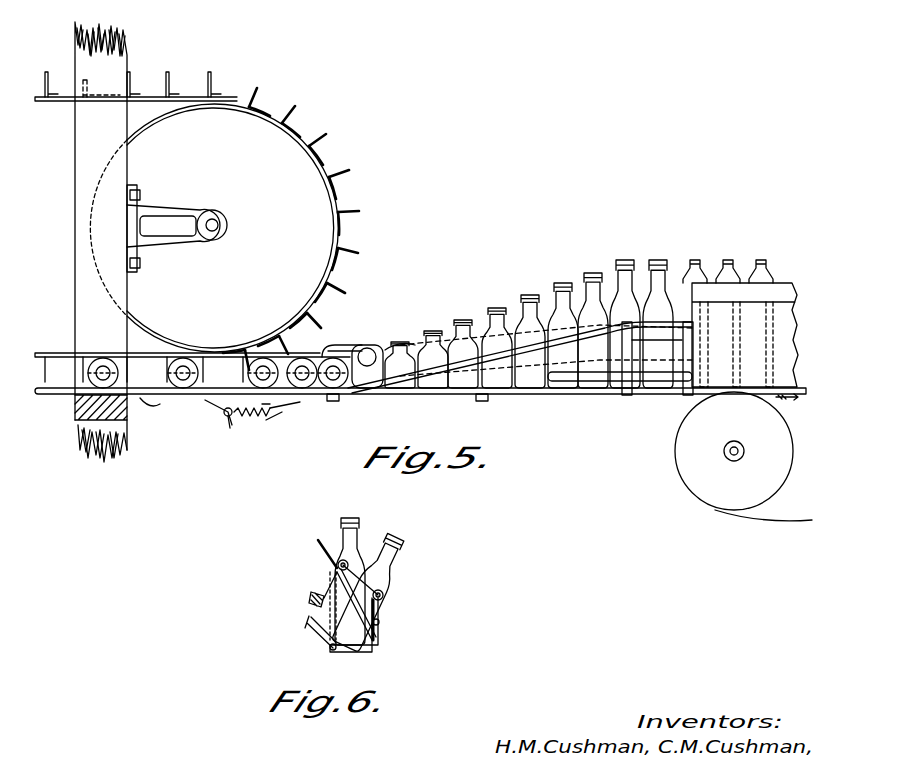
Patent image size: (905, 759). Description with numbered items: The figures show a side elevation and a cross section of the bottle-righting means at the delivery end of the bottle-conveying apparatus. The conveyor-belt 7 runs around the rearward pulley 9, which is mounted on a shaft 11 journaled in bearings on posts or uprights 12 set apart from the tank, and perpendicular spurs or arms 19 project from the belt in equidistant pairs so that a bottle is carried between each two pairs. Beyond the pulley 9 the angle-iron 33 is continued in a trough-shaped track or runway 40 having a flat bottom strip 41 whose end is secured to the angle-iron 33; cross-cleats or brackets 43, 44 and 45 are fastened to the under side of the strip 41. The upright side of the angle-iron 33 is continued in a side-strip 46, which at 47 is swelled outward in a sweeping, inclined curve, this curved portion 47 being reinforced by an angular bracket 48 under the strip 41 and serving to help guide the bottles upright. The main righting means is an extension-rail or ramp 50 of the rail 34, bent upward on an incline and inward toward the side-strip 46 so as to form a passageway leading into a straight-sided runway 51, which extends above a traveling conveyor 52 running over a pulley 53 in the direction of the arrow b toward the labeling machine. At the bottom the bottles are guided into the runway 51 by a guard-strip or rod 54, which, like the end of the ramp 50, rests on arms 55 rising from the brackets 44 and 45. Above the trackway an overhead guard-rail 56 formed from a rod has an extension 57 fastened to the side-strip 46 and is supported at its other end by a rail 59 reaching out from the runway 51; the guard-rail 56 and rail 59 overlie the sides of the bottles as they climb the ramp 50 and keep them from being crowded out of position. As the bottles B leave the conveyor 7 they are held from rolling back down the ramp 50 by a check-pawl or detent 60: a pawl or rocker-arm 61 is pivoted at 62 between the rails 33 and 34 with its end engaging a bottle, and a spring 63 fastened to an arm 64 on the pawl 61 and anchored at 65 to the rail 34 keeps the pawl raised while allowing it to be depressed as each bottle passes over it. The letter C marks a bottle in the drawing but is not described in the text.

In FIG. 5, the conveyor-belt 7 is at (40, 102).
In FIG. 5, the rearward pulley 9 is at (232, 228).
In FIG. 5, the shaft 11 is at (218, 225).
In FIG. 5, the post 12 is at (101, 242).
In FIG. 5, the spurs or arms 19 is at (213, 96).
In FIG. 5, the angle-iron 33 is at (192, 370).
In FIG. 5, the rail or track 34 is at (154, 409).
In FIG. 5, the trough-shaped track or runway 40 is at (468, 318).
In FIG. 5, the flat bottom strip 41 is at (432, 398).
In FIG. 5, the cross-cleat or bracket 43 is at (336, 402).
In FIG. 5, the cross-cleat or bracket 44 is at (626, 396).
In FIG. 6, the cross-cleat or bracket 44 is at (380, 645).
In FIG. 5, the cross-cleat or bracket 45 is at (686, 396).
In FIG. 5, the side-strip 46 is at (332, 345).
In FIG. 5, the curved and inclined portion 47 is at (440, 345).
In FIG. 5, the angular bracket 48 is at (481, 401).
In FIG. 6, the angular bracket 48 is at (345, 652).
In FIG. 5, the extension-rail or ramp 50 is at (448, 344).
In FIG. 6, the extension-rail or ramp 50 is at (384, 593).
In FIG. 5, the runway 51 is at (782, 290).
In FIG. 6, the runway 51 is at (317, 546).
In FIG. 5, the traveling belt or conveyor 52 is at (790, 519).
In FIG. 5, the pulley 53 is at (734, 451).
In FIG. 5, the guard-strip or rod 54 is at (668, 352).
In FIG. 6, the guard-strip or rod 54 is at (380, 621).
In FIG. 5, the arms 55 is at (628, 343).
In FIG. 6, the arms 55 is at (380, 606).
In FIG. 5, the overhead guard-rail 56 is at (395, 345).
In FIG. 6, the overhead guard-rail 56 is at (338, 565).
In FIG. 6, the extension 57 is at (345, 578).
In FIG. 6, the rail 59 is at (314, 605).
In FIG. 5, the check-pawl or detent 60 is at (262, 414).
In FIG. 5, the pawl or rocker-arm 61 is at (287, 410).
In FIG. 5, the pivot 62 is at (217, 419).
In FIG. 5, the spring 63 is at (280, 426).
In FIG. 5, the arm 64 is at (229, 428).
In FIG. 5, the anchor 65 is at (275, 414).
In FIG. 5, the bottles B is at (172, 426).
In FIG. 6, the bottles B is at (372, 572).
In FIG. 5, the bottle C is at (626, 262).
In FIG. 6, the bottle C is at (393, 536).
In FIG. 5, the arrow b is at (787, 404).